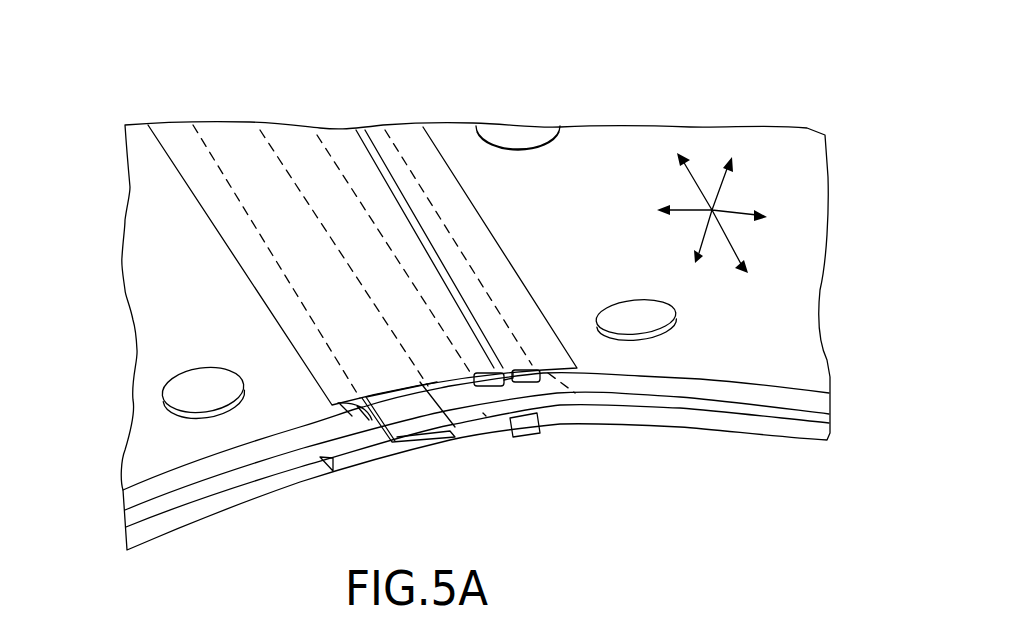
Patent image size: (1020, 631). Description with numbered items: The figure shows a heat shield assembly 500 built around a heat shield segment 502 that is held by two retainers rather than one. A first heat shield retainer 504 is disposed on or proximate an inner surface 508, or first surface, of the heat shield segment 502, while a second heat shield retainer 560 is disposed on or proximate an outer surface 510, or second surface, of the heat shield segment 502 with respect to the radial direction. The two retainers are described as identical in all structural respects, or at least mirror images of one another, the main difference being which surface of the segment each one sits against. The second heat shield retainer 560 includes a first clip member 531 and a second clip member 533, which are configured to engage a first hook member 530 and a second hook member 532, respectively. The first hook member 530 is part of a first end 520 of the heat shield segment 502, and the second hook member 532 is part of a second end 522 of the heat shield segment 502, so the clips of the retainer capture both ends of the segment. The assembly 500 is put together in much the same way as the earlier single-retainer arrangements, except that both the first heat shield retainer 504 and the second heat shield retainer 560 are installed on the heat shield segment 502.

The heat shield assembly 500 is at (126, 81).
The heat shield segment 502 is at (805, 245).
The first heat shield retainer 504 is at (408, 426).
The inner surface 508 is at (182, 346).
The outer surface 510 is at (163, 265).
The first end 520 is at (350, 452).
The second end 522 is at (483, 413).
The first hook member 530 is at (493, 368).
The first clip member 531 is at (478, 385).
The second hook member 532 is at (541, 412).
The second clip member 533 is at (540, 382).
The second heat shield retainer 560 is at (520, 381).